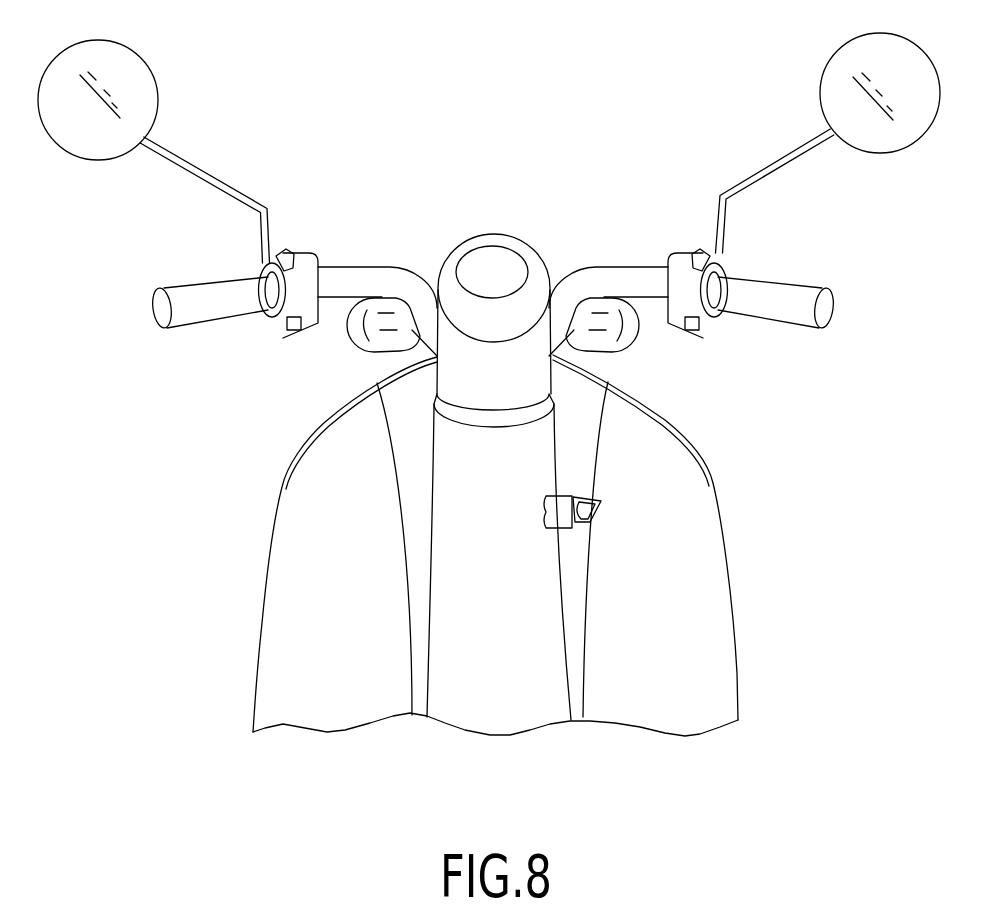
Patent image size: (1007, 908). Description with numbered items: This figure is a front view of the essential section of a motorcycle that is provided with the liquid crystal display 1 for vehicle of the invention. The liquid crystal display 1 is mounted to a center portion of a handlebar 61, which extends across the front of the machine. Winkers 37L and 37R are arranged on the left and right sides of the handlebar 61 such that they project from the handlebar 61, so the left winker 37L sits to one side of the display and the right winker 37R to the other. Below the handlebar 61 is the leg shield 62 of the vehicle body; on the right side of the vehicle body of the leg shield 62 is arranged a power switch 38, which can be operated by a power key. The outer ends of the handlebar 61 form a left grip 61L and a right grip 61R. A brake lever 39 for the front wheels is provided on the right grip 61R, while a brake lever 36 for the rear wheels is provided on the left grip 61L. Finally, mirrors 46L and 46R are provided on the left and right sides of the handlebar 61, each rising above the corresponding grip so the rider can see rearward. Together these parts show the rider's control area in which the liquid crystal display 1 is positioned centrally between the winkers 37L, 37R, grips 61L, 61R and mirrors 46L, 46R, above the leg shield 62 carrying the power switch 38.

The liquid crystal display for vehicle 1 is at (546, 229).
The brake lever for rear wheels 36 is at (190, 330).
The winker 37L is at (357, 337).
The winker 37R is at (633, 327).
The power switch 38 is at (562, 498).
The brake lever for front wheels 39 is at (803, 320).
The mirror 46L is at (158, 78).
The mirror 46R is at (820, 88).
The handlebar 61 is at (380, 268).
The left grip 61L is at (193, 290).
The right grip 61R is at (785, 290).
The leg shield 62 is at (720, 623).